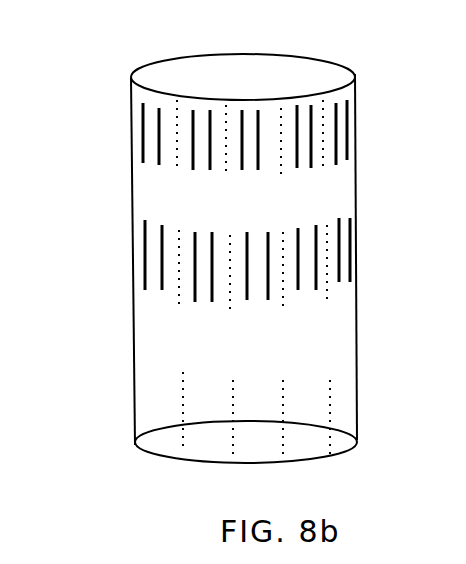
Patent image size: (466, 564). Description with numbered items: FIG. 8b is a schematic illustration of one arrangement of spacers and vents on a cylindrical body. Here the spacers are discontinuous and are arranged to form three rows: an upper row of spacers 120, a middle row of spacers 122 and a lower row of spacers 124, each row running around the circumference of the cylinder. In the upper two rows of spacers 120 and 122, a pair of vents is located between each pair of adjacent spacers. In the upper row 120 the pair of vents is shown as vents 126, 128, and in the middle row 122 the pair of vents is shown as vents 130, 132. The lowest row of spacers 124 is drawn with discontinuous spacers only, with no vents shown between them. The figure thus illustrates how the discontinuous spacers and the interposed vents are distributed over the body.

The row of spacers 120 is at (176, 115).
The row of spacers 122 is at (180, 298).
The row of spacers 124 is at (183, 400).
The vent 126 is at (143, 134).
The vent 128 is at (160, 160).
The vent 130 is at (298, 280).
The vent 132 is at (317, 275).